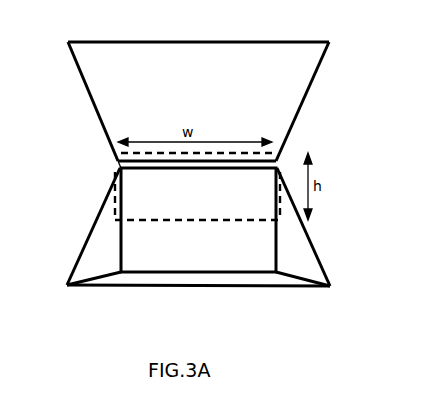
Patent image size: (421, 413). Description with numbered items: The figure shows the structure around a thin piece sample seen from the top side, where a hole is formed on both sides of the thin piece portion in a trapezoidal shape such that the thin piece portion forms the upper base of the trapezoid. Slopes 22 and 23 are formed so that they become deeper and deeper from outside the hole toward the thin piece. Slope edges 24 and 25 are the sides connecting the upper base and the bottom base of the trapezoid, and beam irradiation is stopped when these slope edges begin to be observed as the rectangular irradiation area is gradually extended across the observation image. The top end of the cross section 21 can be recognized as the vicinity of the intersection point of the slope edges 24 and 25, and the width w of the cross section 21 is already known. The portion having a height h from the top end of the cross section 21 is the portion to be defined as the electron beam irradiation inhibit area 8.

The electron beam irradiation inhibit area 8 is at (83, 154).
The cross section 21 is at (183, 245).
The slope 22 is at (324, 227).
The slope 23 is at (213, 101).
The slope edge 24 is at (76, 226).
The slope edge 25 is at (78, 101).